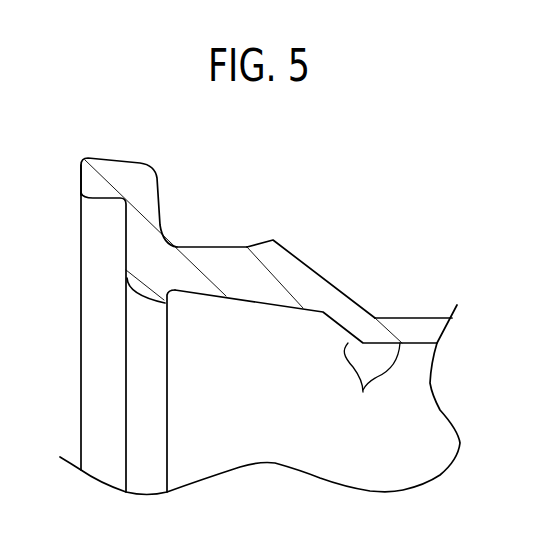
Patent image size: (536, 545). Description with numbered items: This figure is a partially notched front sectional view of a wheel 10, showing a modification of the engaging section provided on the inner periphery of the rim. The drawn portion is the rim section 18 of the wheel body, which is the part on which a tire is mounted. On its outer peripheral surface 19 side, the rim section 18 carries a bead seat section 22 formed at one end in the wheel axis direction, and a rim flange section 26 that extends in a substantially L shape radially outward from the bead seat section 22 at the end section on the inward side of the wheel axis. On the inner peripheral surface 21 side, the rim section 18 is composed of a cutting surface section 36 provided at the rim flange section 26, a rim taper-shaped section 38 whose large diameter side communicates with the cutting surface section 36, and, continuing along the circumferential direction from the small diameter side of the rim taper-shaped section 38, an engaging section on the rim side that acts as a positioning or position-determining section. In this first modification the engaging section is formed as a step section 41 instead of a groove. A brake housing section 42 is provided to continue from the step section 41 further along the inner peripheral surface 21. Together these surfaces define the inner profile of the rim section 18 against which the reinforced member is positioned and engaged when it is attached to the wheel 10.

The wheel 10 is at (299, 203).
The rim section 18 is at (420, 327).
The outer peripheral surface 19 is at (329, 247).
The inner peripheral surface 21 is at (269, 315).
The bead seat section 22 is at (228, 246).
The rim flange section 26 is at (107, 172).
The cutting surface section 36 is at (124, 225).
The rim taper-shaped section 38 is at (131, 306).
The step section 41 is at (173, 292).
The brake housing section 42 is at (372, 382).